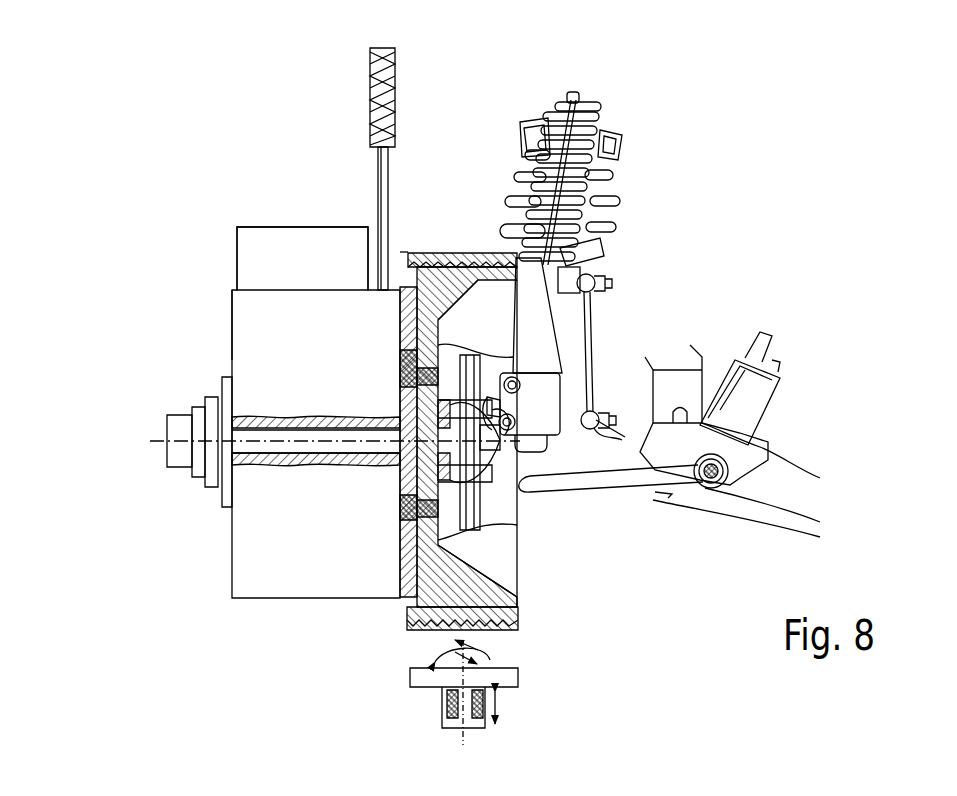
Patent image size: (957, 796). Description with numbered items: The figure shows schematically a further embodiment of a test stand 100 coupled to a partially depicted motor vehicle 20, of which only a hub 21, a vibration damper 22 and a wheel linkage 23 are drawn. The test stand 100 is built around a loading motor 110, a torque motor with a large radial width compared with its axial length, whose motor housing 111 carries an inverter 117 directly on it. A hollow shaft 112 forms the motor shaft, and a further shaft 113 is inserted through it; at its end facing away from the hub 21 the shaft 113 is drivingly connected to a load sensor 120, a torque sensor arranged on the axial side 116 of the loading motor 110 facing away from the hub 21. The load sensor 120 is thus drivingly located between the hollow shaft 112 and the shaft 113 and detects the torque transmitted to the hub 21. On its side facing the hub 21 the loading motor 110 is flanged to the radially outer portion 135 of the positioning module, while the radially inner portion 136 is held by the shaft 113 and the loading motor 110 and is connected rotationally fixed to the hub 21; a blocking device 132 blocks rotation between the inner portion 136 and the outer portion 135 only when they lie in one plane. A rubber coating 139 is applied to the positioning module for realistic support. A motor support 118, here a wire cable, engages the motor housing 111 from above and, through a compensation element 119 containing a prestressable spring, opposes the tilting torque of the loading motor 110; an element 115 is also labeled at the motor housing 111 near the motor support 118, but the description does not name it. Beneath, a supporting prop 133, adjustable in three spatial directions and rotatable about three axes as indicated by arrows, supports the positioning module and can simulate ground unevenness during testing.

The test stand 100 is at (258, 135).
The loading motor 110 is at (188, 282).
The motor vehicle 20 is at (672, 178).
The hub 21 is at (482, 484).
The vibration damper 22 is at (557, 320).
The wheel linkage 23 is at (627, 493).
The motor housing 111 is at (246, 590).
The hollow shaft 112 is at (312, 450).
The shaft 113 is at (268, 447).
The guide rod 115 is at (399, 252).
The axial side 116 is at (226, 278).
The inverter 117 is at (314, 260).
The motor support 118 is at (379, 173).
The compensation element 119 is at (398, 90).
The load sensor 120 is at (212, 397).
The blocking device 132 is at (395, 555).
The supporting prop 133 is at (420, 705).
The outer portion 135 is at (517, 585).
The inner portion 136 is at (430, 413).
The rubber coating 139 is at (455, 250).